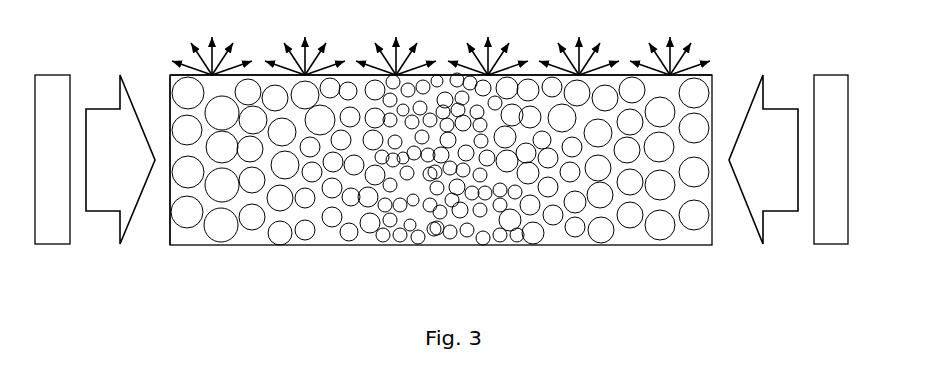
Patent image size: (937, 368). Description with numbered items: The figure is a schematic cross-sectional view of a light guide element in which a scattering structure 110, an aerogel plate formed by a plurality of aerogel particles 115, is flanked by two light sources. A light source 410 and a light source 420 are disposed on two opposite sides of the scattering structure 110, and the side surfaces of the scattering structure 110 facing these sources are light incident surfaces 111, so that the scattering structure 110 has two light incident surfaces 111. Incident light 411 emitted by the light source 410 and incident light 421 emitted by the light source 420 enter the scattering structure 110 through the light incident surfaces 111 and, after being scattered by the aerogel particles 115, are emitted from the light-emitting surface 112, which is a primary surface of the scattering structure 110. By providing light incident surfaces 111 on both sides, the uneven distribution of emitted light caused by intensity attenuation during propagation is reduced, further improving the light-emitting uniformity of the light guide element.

The scattering structure 110 is at (441, 156).
The light incident surface 111 is at (226, 123).
The light-emitting surface 112 is at (441, 38).
The aerogel particles 115 is at (630, 263).
The light source 410 is at (81, 193).
The incident light 411 is at (145, 123).
The light source 420 is at (801, 193).
The incident light 421 is at (732, 125).